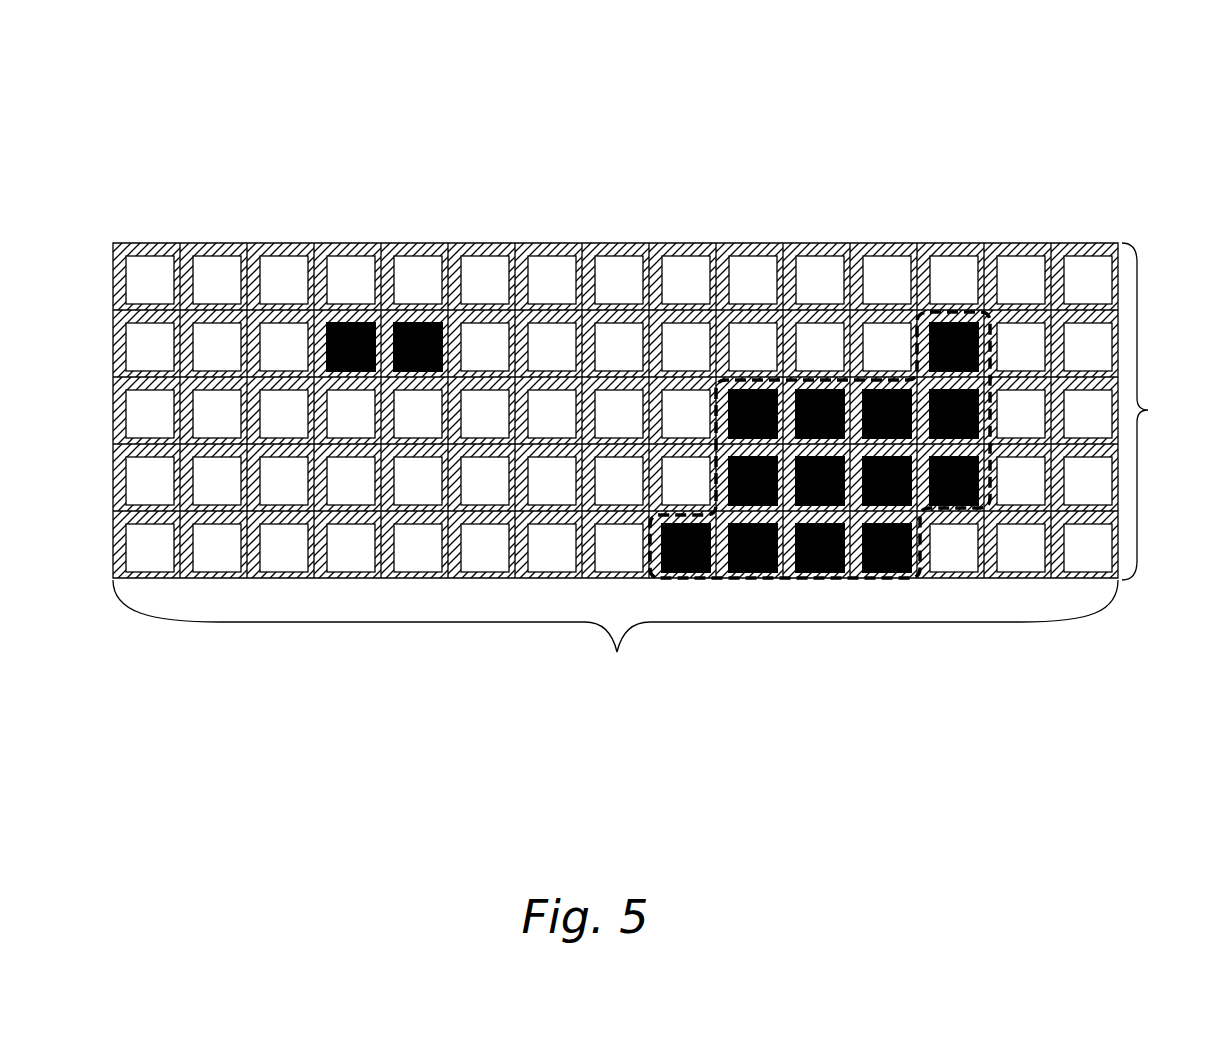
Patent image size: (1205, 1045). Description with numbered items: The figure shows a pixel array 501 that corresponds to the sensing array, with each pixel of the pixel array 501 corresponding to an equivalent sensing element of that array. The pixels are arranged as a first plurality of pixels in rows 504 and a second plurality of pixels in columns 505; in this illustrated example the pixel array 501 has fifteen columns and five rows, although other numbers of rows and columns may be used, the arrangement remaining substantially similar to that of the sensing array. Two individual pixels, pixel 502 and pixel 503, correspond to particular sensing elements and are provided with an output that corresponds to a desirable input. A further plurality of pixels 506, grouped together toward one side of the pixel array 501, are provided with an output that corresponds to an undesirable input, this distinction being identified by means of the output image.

The pixel array 501 is at (1031, 162).
The pixel 502 is at (347, 313).
The pixel 503 is at (420, 313).
The rows 504 is at (1159, 411).
The columns 505 is at (615, 631).
The plurality of pixels 506 is at (957, 313).